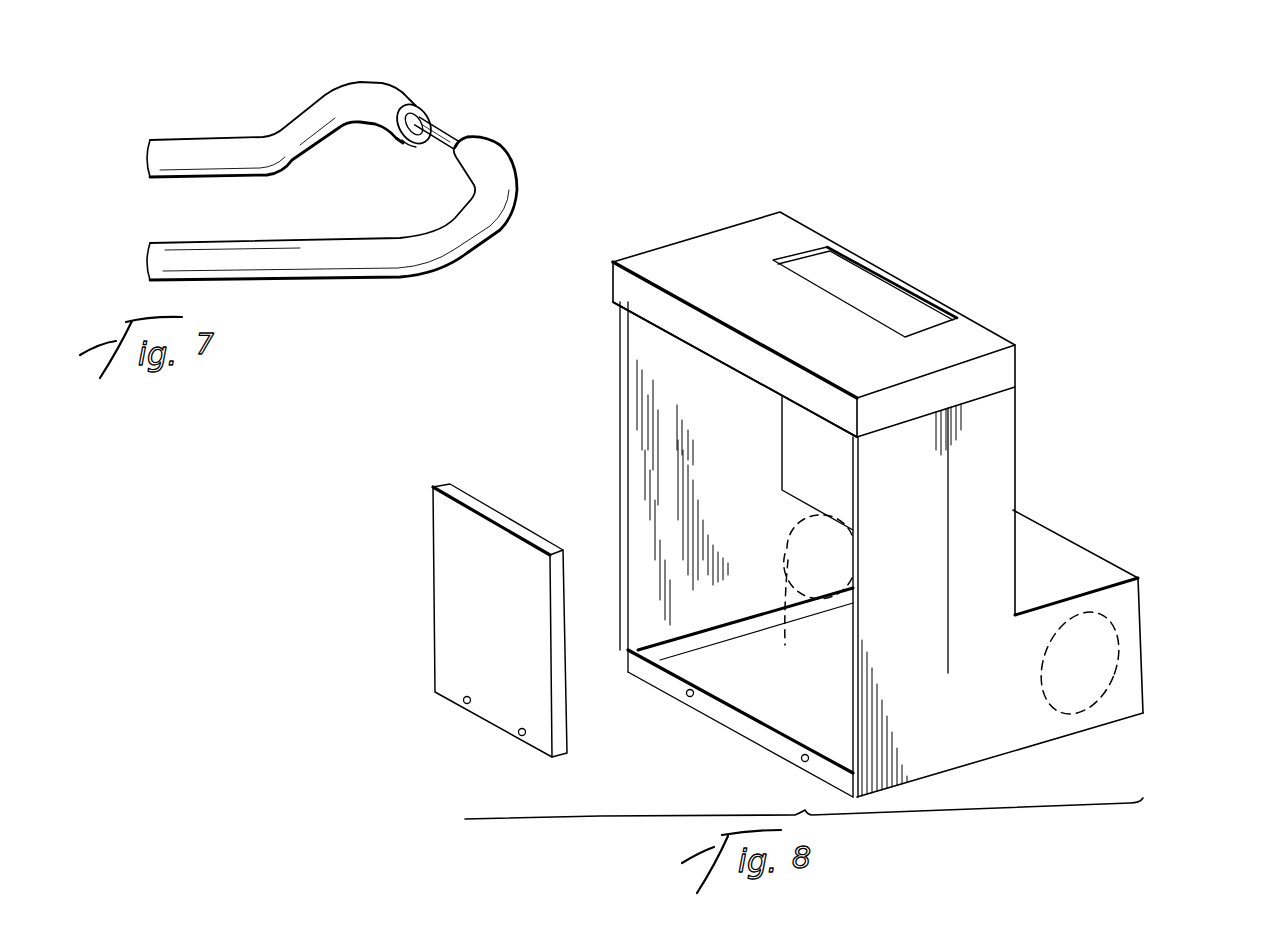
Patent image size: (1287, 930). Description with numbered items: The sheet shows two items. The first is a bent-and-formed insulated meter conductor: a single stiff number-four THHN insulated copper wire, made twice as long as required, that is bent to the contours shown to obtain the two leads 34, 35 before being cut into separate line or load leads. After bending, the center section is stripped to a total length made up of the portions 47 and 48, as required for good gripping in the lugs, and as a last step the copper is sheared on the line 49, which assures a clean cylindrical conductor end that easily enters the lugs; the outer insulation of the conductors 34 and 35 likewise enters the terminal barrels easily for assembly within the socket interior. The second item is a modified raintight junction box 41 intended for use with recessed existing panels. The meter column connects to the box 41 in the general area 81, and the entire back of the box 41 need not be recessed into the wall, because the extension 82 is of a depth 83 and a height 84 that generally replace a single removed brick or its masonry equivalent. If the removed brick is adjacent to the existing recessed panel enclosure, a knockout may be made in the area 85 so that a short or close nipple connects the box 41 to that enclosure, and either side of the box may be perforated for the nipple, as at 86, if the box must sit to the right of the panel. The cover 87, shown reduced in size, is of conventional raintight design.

In FIG. 7, the lead 34 is at (336, 284).
In FIG. 7, the lead 35 is at (267, 121).
In FIG. 7, the stripped length 47 is at (434, 160).
In FIG. 7, the stripped length 48 is at (405, 150).
In FIG. 7, the shear line 49 is at (430, 112).
In FIG. 8, the junction box 41 is at (1020, 325).
In FIG. 8, the connection area 81 is at (868, 272).
In FIG. 8, the extension 82 is at (1138, 578).
In FIG. 8, the depth 83 is at (1060, 597).
In FIG. 8, the height 84 is at (1143, 681).
In FIG. 8, the knockout area 85 is at (1115, 635).
In FIG. 8, the side perforation 86 is at (807, 598).
In FIG. 8, the cover 87 is at (450, 577).